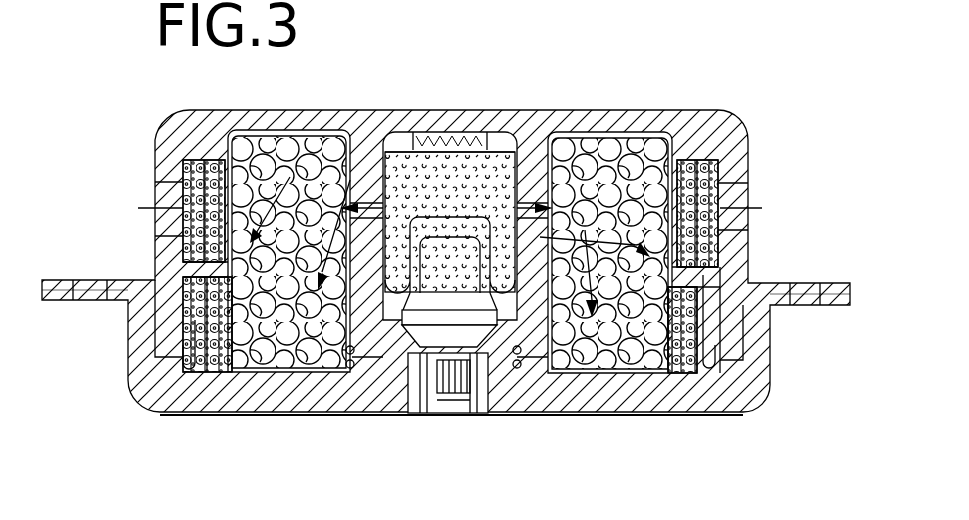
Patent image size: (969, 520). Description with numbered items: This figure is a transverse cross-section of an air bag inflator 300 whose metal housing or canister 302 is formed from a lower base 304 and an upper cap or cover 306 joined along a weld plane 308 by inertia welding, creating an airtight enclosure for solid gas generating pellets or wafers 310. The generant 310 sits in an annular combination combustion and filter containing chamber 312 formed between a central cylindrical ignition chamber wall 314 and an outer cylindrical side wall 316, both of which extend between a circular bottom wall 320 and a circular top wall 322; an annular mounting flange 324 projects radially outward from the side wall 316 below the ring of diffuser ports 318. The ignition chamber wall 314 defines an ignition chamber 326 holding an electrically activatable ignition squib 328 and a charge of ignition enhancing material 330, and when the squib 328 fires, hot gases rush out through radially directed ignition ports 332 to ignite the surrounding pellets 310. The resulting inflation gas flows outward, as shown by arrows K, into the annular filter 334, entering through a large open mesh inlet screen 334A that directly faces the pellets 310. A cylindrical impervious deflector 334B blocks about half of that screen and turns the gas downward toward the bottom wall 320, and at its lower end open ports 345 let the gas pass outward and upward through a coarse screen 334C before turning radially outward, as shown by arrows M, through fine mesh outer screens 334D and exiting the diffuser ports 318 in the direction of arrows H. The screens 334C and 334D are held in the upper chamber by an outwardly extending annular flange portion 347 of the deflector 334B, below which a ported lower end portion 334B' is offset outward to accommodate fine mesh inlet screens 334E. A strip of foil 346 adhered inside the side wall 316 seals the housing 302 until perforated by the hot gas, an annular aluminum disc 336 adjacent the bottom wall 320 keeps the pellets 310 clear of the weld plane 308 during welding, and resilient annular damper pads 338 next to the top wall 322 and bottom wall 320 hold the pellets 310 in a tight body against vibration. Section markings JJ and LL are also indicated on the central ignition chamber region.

The air bag inflator 300 is at (413, 487).
The metal housing or canister 302 is at (786, 280).
The lower base 304 is at (115, 383).
The upper cap or cover 306 is at (750, 127).
The weld plane 308 is at (153, 393).
The gas generating material (pellets or wafers) 310 is at (263, 357).
The combination combustion and filter containing chamber 312 is at (345, 170).
The ignition chamber wall 314 is at (369, 170).
The outer side wall 316 is at (157, 250).
The diffuser ports 318 is at (175, 182).
The bottom wall 320 is at (193, 393).
The top wall 322 is at (670, 110).
The mounting flange 324 is at (62, 300).
The ignition chamber 326 is at (392, 340).
The ignition squib 328 is at (453, 293).
The ignition enhancing material 330 is at (417, 175).
The ignition ports 332 is at (368, 205).
The annular filter 334 is at (197, 160).
The open mesh inlet screen 334A is at (190, 293).
The cylindrical shield or deflector 334B is at (433, 122).
The ported lower end portion of the deflector 334B' is at (419, 407).
The coarse cylindrical screen 334C is at (196, 145).
The fine mesh outer screens 334D is at (200, 172).
The fine mesh inlet screens 334E is at (220, 370).
The annular aluminum disc 336 is at (287, 377).
The resilient annular damper pads 338 is at (266, 130).
The open spaces or ports 345 is at (130, 310).
The strip of foil 346 is at (183, 222).
The annular flange portion 347 is at (210, 273).
The arrows H is at (120, 208).
The arrows M is at (183, 200).
The arrows K is at (237, 367).
The section line JJ is at (545, 235).
The section line LL is at (510, 273).